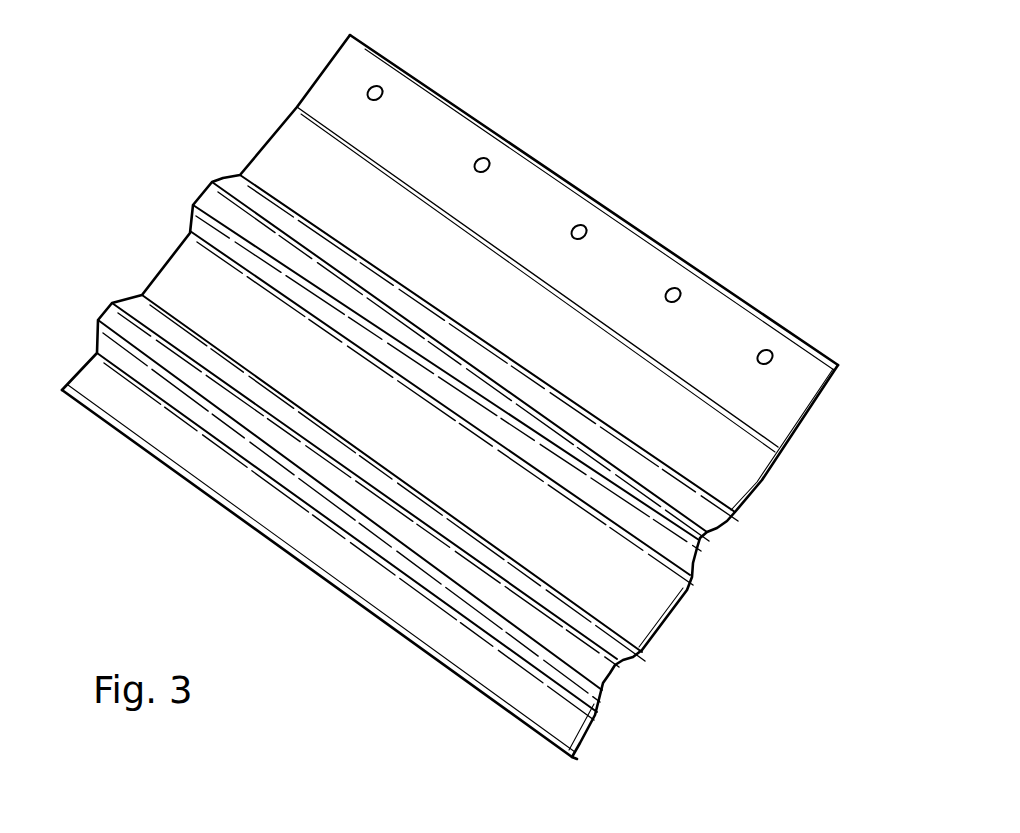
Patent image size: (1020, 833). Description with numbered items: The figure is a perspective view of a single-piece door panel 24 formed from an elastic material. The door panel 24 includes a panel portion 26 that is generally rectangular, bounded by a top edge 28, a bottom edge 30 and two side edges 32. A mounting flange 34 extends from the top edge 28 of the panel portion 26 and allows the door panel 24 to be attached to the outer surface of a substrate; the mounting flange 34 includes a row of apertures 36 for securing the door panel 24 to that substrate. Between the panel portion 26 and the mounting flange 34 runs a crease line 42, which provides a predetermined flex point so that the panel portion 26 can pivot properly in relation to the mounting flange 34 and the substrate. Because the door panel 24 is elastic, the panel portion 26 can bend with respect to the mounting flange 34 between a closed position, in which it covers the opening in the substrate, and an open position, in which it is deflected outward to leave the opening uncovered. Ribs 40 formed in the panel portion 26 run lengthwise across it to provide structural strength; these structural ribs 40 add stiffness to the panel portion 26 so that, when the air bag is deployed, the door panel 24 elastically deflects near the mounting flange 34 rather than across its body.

The door panel 24 is at (252, 130).
The panel portion 26 is at (633, 608).
The top edge 28 is at (753, 428).
The bottom edge 30 is at (438, 662).
The side edges 32 is at (158, 275).
The mounting flange 34 is at (530, 192).
The apertures 36 is at (383, 86).
The ribs 40 is at (700, 540).
The crease line 42 is at (387, 170).